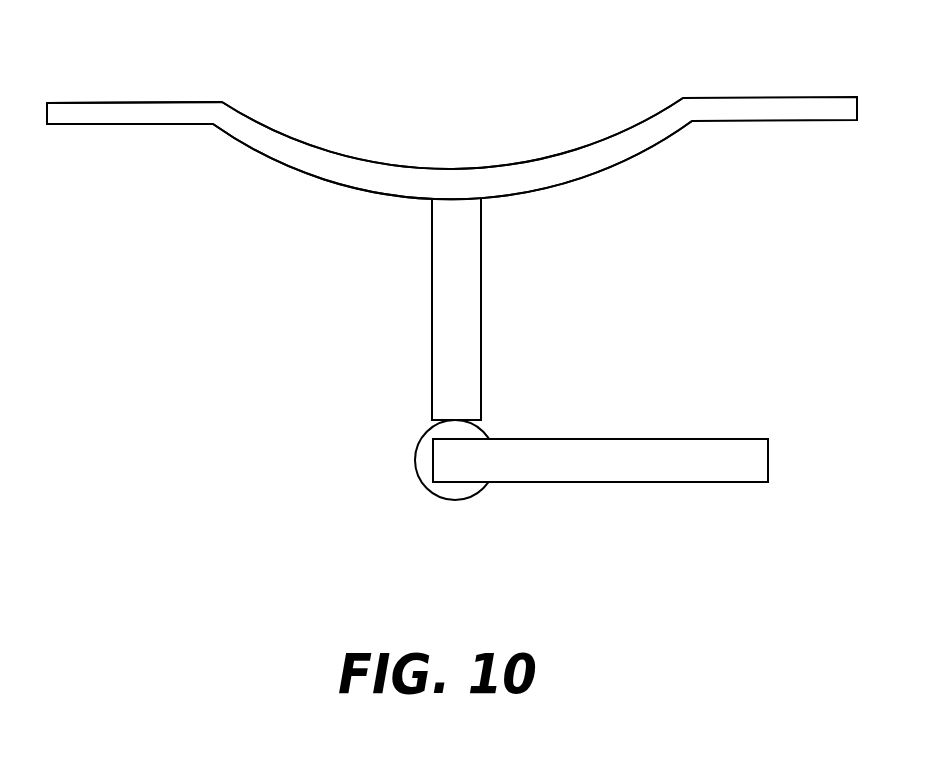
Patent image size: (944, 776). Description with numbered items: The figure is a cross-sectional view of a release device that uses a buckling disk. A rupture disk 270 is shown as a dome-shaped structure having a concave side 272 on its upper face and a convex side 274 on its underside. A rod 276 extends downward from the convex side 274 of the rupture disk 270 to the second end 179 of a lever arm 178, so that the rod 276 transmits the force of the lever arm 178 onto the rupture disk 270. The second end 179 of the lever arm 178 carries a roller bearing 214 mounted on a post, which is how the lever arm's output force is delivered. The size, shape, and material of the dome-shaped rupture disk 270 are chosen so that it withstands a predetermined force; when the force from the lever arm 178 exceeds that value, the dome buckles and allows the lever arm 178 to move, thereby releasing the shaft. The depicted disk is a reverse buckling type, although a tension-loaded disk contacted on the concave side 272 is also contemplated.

The rupture disk 270 is at (456, 142).
The concave side 272 is at (256, 123).
The convex side 274 is at (297, 173).
The rod 276 is at (460, 288).
The roller bearing 214 is at (455, 501).
The second end 179 is at (447, 448).
The lever arm 178 is at (649, 515).